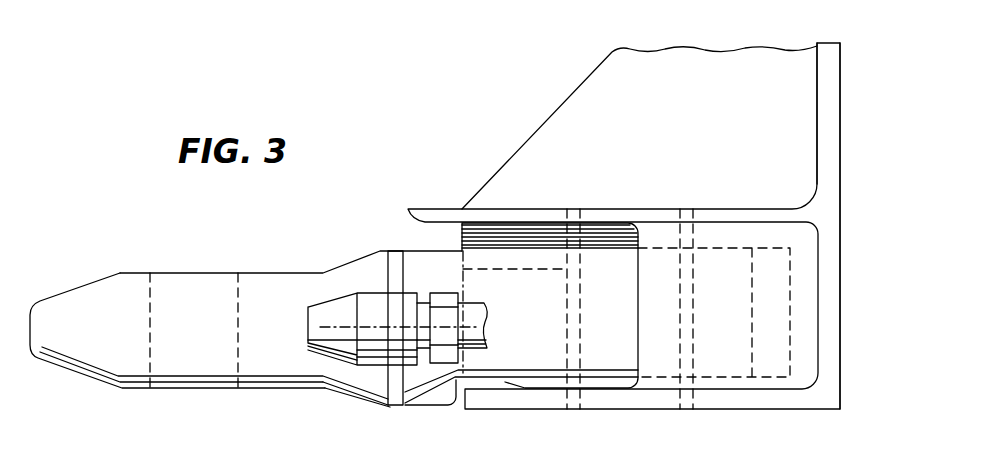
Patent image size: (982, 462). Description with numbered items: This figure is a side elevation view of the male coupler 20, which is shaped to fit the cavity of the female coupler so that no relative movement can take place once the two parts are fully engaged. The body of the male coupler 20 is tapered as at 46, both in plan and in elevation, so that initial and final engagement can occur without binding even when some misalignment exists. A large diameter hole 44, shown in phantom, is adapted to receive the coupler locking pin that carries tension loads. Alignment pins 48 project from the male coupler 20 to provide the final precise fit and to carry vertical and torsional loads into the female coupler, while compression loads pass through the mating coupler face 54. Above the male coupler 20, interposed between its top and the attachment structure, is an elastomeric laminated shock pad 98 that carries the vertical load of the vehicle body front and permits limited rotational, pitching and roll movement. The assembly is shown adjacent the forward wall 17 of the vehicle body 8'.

The support bracket 8' is at (643, 226).
The forward wall 17 is at (832, 118).
The male coupler 20 is at (253, 239).
The large diameter hole 44 is at (157, 373).
The taper 46 is at (87, 376).
The alignment pins 48 is at (322, 308).
The mating coupler face 54 is at (380, 272).
The elastomeric shock pad 98 is at (492, 230).